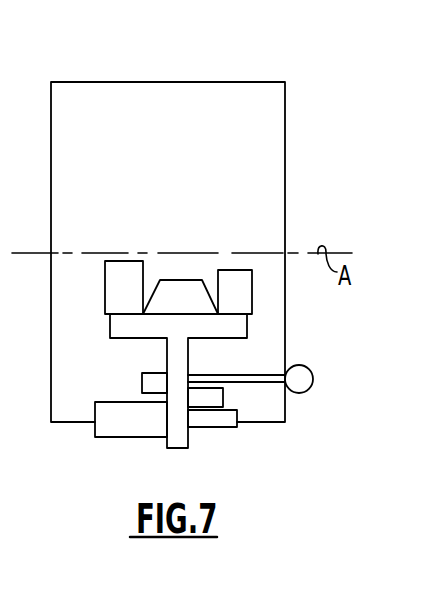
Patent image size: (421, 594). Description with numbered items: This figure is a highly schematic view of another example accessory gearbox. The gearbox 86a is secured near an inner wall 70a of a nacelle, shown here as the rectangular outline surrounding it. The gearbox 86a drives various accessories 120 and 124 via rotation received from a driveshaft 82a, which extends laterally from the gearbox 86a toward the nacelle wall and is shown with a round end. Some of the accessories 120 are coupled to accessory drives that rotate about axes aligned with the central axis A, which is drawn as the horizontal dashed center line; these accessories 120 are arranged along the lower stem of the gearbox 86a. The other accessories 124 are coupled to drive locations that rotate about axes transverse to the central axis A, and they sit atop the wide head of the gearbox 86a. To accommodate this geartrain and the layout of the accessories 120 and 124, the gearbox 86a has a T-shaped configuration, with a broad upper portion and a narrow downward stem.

The inner wall 70a is at (133, 82).
The accessories 124 is at (230, 278).
The gearbox 86a is at (188, 438).
The driveshaft 82a is at (256, 378).
The accessories 120 is at (148, 383).